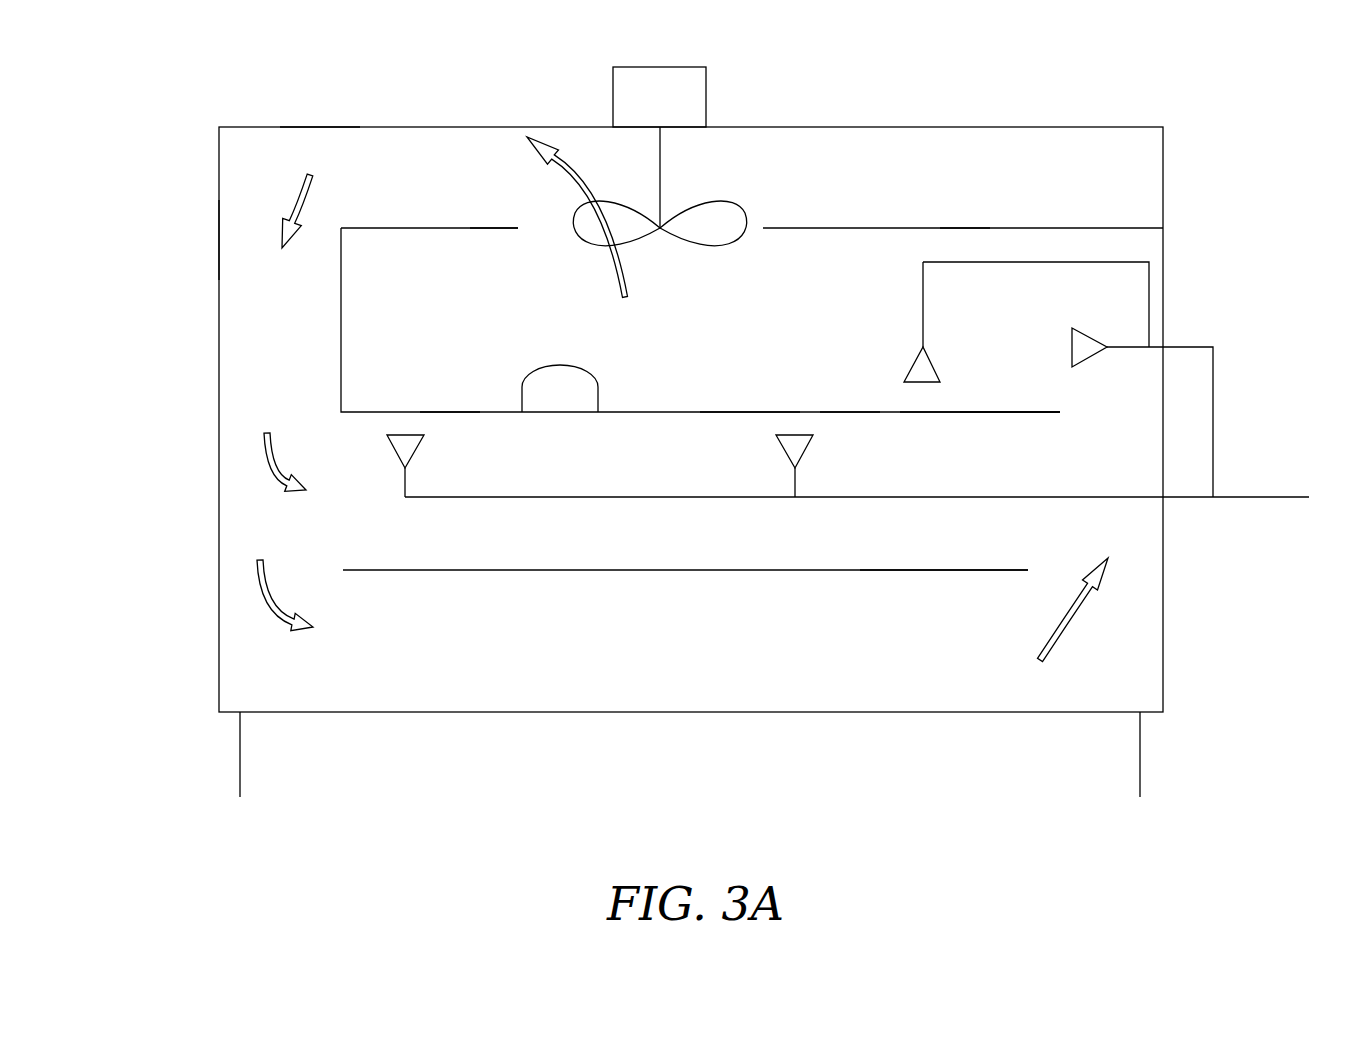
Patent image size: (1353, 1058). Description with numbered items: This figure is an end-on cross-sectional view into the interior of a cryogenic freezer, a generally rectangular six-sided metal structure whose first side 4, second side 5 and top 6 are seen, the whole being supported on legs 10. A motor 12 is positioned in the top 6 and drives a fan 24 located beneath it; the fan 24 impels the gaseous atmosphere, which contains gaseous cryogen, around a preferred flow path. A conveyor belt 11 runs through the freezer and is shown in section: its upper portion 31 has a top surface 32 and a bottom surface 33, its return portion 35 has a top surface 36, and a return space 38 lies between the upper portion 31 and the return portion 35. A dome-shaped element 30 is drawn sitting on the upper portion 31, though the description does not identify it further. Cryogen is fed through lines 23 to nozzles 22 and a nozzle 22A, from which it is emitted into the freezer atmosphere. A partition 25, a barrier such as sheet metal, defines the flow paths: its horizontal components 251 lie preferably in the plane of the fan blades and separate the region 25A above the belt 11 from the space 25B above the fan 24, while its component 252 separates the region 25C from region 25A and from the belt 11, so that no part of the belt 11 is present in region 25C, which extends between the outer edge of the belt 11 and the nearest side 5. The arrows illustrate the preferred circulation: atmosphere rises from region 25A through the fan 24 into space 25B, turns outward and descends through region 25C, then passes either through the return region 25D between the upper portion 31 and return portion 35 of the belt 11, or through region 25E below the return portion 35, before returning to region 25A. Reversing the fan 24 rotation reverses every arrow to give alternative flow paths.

The first side 4 is at (1163, 170).
The second side 5 is at (219, 237).
The top 6 is at (310, 127).
The legs 10 is at (240, 753).
The conveyor belt 11 is at (840, 412).
The motors 12 is at (659, 147).
The nozzles 22 is at (418, 445).
The nozzle 22A is at (1070, 347).
The lines 23 is at (555, 497).
The fans 24 is at (659, 223).
The partition 25 is at (380, 228).
The horizontal components 251 is at (485, 228).
The partition component 252 is at (341, 328).
The region above the belt 25A is at (587, 233).
The space above fans 25B is at (364, 192).
The region outside outer edge of belt 25C is at (282, 407).
The return region 25D is at (576, 577).
The region below return portion 25E is at (883, 610).
The heater 30 is at (560, 388).
The upper portion 31 is at (748, 412).
The top surface 32 is at (450, 412).
The bottom surface 33 is at (1000, 412).
The return portion 35 is at (925, 570).
The top surface of return portion 36 is at (365, 570).
The return space 38 is at (980, 441).